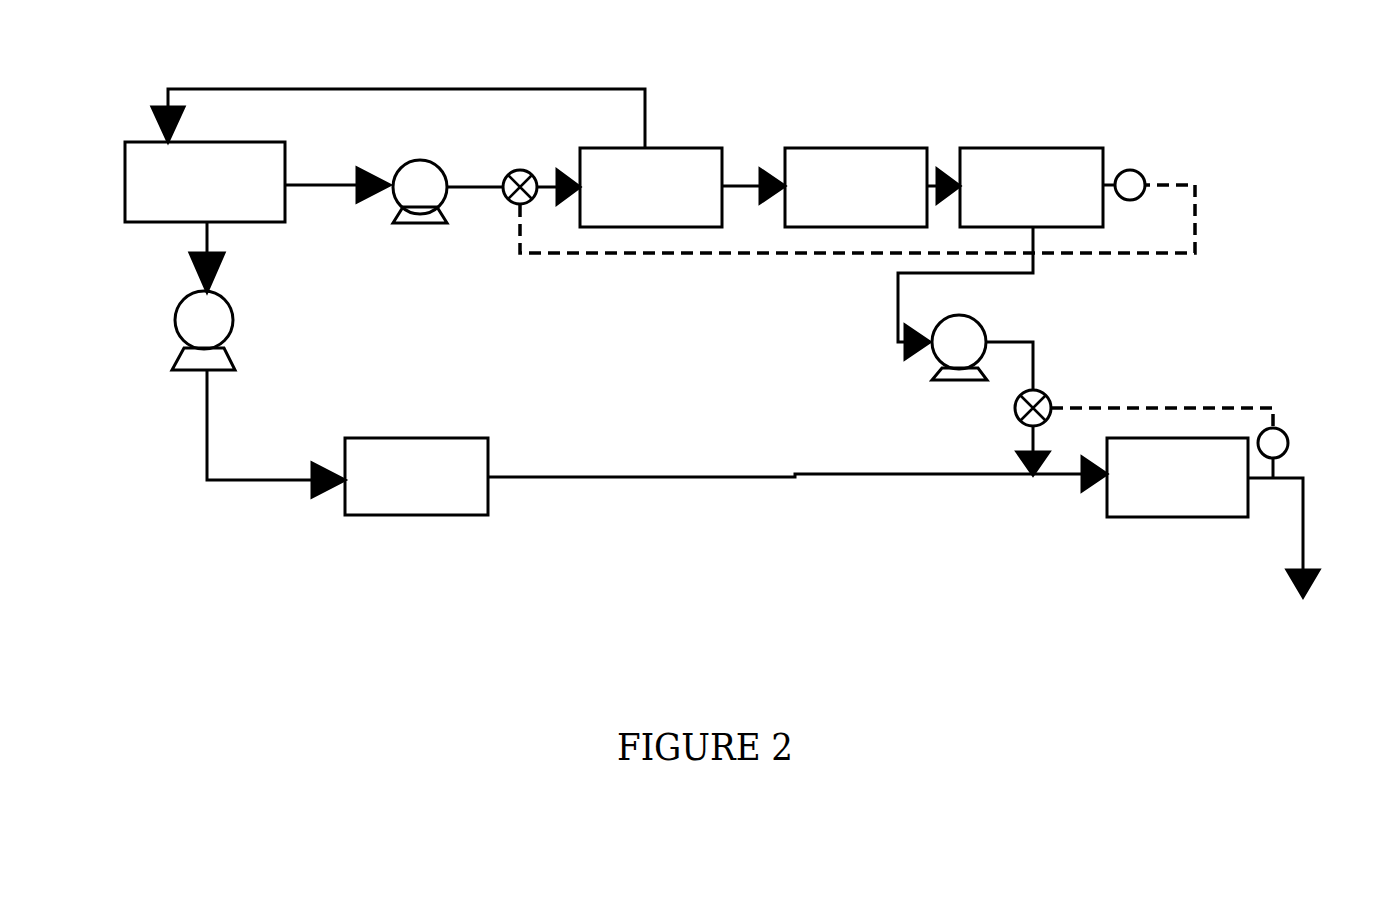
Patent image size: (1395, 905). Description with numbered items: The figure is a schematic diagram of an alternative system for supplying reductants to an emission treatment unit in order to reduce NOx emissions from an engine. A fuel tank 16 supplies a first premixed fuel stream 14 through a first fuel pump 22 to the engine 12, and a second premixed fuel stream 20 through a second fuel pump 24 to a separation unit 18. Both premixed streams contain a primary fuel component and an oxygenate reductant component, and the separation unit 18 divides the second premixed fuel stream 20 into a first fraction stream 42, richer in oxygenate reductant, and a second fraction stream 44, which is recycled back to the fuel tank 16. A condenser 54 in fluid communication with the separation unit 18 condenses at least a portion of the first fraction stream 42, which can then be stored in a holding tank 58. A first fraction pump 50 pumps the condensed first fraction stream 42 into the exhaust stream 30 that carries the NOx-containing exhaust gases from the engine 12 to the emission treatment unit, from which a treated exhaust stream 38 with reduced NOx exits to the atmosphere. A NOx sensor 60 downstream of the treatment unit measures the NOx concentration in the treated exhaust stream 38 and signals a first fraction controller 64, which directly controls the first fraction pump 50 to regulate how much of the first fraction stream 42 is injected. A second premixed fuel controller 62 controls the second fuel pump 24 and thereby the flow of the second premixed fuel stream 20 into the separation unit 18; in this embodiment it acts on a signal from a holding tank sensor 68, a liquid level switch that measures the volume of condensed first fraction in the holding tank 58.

The engine 12 is at (405, 515).
The first premixed fuel stream 14 is at (207, 425).
The fuel tank 16 is at (125, 175).
The separation unit 18 is at (660, 148).
The second premixed fuel stream 20 is at (343, 183).
The first fuel pump 22 is at (170, 318).
The second fuel pump 24 is at (438, 164).
The exhaust stream 30 is at (763, 480).
The treated exhaust stream 38 is at (1300, 517).
The first fraction stream 42 is at (745, 186).
The second fraction stream 44 is at (558, 89).
The first fraction pump 50 is at (982, 338).
The condenser 54 is at (856, 148).
The holding tank 58 is at (1030, 148).
The NOx sensor 60 is at (1290, 445).
The second premixed fuel controller 62 is at (523, 170).
The first fraction controller 64 is at (1050, 400).
The holding tank sensor 68 is at (1145, 178).